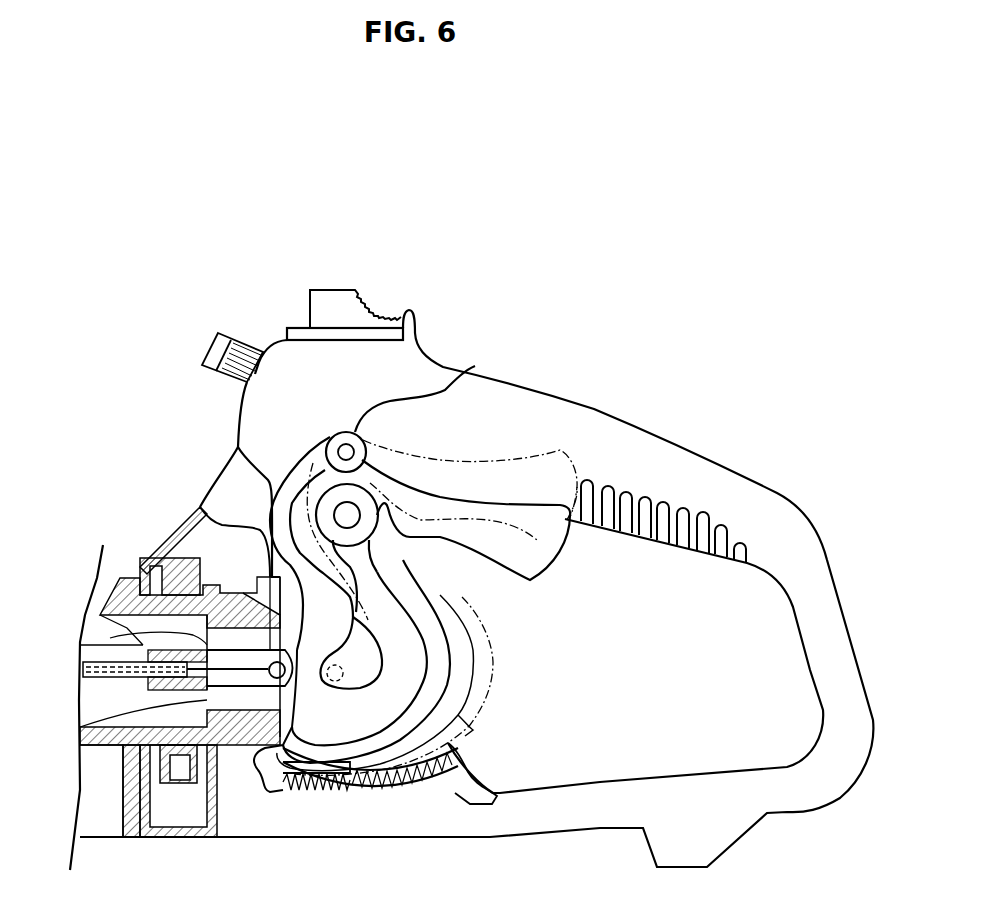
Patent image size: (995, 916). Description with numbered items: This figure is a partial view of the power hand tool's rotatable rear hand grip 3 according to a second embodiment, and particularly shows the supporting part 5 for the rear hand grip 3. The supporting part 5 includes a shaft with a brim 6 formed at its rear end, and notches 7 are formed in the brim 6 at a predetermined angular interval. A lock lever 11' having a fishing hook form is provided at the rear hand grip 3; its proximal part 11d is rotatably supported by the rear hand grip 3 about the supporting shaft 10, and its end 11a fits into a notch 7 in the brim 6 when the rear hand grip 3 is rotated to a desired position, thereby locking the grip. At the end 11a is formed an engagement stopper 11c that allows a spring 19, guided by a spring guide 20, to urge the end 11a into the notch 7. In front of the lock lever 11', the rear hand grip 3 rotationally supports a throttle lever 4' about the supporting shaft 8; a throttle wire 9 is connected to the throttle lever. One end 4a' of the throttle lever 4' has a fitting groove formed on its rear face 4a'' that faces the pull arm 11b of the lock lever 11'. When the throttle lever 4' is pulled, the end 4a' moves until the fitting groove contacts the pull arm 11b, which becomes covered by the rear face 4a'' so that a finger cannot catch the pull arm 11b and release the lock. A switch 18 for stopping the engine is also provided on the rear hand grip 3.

The rear hand grip 3 is at (773, 493).
The switch 18 is at (333, 296).
The supporting shaft 8 is at (348, 450).
The supporting shaft 10 is at (347, 515).
The throttle lever 4' is at (467, 493).
The rear face 4a'' is at (445, 653).
The one end 4a' is at (154, 671).
The proximal part 11d is at (313, 475).
The pull arm 11b is at (423, 630).
The lock lever 11' is at (418, 685).
The end 11a is at (220, 737).
The engagement stopper 11c is at (277, 790).
The spring 19 is at (310, 790).
The spring guide 20 is at (393, 800).
The supporting part 5 is at (120, 598).
The brim 6 is at (220, 585).
The throttle wire 9 is at (148, 652).
The notch 7 is at (217, 780).